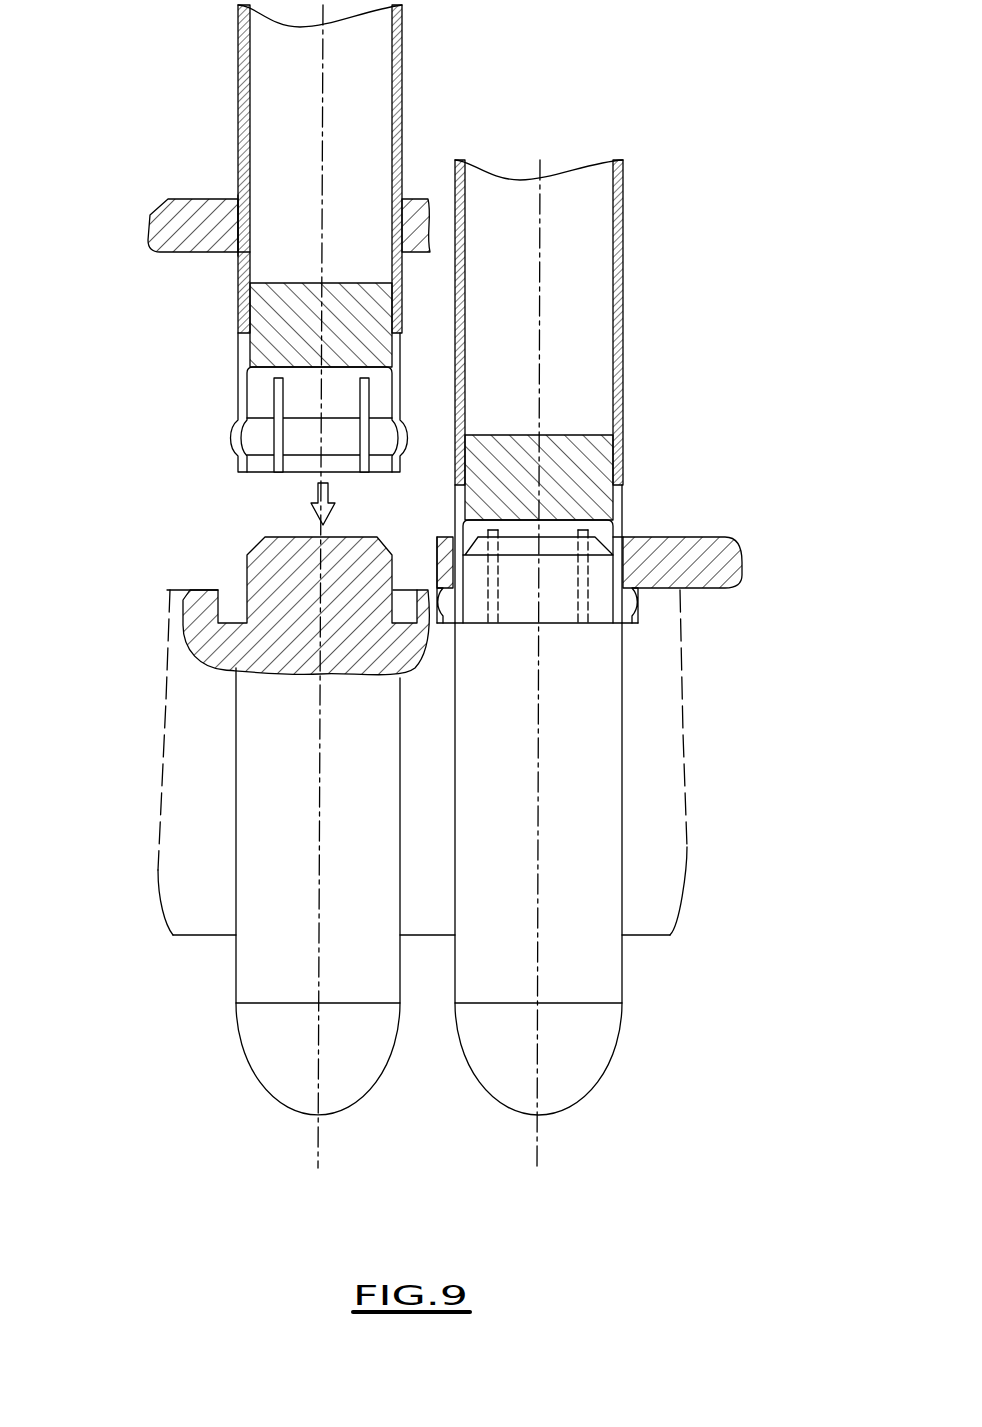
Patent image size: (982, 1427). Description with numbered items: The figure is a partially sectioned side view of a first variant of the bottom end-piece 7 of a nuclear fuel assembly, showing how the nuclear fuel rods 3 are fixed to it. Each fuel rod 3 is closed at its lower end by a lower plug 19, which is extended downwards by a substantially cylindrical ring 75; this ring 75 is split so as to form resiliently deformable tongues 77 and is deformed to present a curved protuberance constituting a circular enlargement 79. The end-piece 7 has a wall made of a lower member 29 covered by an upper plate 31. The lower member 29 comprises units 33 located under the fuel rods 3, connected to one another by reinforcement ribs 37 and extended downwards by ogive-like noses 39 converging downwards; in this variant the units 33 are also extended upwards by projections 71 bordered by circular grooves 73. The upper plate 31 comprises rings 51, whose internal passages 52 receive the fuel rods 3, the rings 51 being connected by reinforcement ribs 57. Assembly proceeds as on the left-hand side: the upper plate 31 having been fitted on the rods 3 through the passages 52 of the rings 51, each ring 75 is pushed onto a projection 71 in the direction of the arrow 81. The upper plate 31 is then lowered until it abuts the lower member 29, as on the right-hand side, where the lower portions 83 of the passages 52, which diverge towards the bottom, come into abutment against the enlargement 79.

The nuclear fuel rod 3 is at (405, 98).
The bottom end-piece 7 is at (701, 710).
The lower plug 19 is at (288, 327).
The lower member 29 is at (690, 792).
The upper plate 31 is at (157, 190).
The unit 33 is at (255, 823).
The reinforcement rib 37 is at (427, 857).
The nose 39 is at (283, 1080).
The ring 51 is at (245, 230).
The internal passage 52 is at (417, 198).
The reinforcement rib 57 is at (193, 200).
The projection 71 is at (287, 540).
The circular groove 73 is at (230, 603).
The cylindrical ring 75 is at (227, 412).
The resiliently deformable tongue 77 is at (380, 460).
The circular enlargement 79 is at (408, 435).
The arrow 81 is at (313, 500).
The lower portion 83 is at (232, 255).